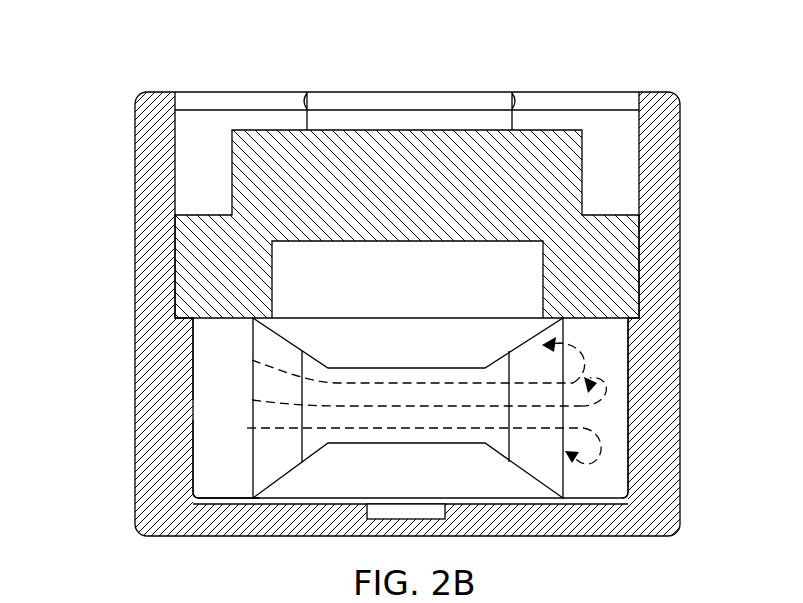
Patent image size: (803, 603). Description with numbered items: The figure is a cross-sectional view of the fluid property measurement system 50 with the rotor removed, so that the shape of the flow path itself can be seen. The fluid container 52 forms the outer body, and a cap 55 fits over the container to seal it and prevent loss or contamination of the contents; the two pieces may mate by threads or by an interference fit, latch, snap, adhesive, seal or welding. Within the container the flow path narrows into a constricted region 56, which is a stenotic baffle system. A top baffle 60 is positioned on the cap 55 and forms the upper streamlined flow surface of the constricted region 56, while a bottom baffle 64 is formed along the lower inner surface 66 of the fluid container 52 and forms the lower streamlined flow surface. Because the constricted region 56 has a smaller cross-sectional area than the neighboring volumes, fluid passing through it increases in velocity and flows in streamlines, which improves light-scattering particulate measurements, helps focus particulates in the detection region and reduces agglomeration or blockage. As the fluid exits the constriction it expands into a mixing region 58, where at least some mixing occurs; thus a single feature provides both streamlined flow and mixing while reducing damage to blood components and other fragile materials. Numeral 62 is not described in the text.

The fluid property measurement system 50 is at (139, 66).
The fluid container 52 is at (135, 160).
The cap 55 is at (212, 257).
The constricted region 56 is at (340, 423).
The mixing region 58 is at (585, 415).
The top baffle 60 is at (540, 335).
The upper corner of cavity 62 is at (209, 326).
The bottom baffle 64 is at (545, 483).
The lower inner surface 66 is at (226, 490).